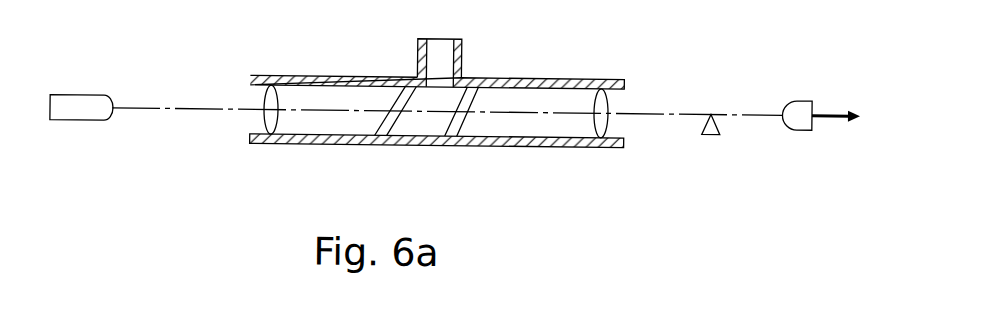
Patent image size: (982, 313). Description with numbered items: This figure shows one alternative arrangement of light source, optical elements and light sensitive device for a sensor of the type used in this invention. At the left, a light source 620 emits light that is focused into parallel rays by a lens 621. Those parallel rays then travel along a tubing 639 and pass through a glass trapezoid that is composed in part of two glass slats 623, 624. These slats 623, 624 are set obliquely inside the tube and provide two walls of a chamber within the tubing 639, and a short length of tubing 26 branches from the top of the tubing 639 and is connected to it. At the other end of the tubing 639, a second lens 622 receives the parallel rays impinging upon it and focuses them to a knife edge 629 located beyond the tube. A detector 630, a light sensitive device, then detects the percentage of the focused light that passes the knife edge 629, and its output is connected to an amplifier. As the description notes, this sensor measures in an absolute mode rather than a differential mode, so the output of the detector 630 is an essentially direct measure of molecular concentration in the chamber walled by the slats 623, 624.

The tubing 26 is at (462, 50).
The light source 620 is at (88, 124).
The lens 621 is at (256, 121).
The lens 622 is at (606, 118).
The glass slat 623 is at (382, 119).
The glass slat 624 is at (467, 118).
The knife edge 629 is at (711, 132).
The detector 630 is at (810, 98).
The tubing 639 is at (625, 79).